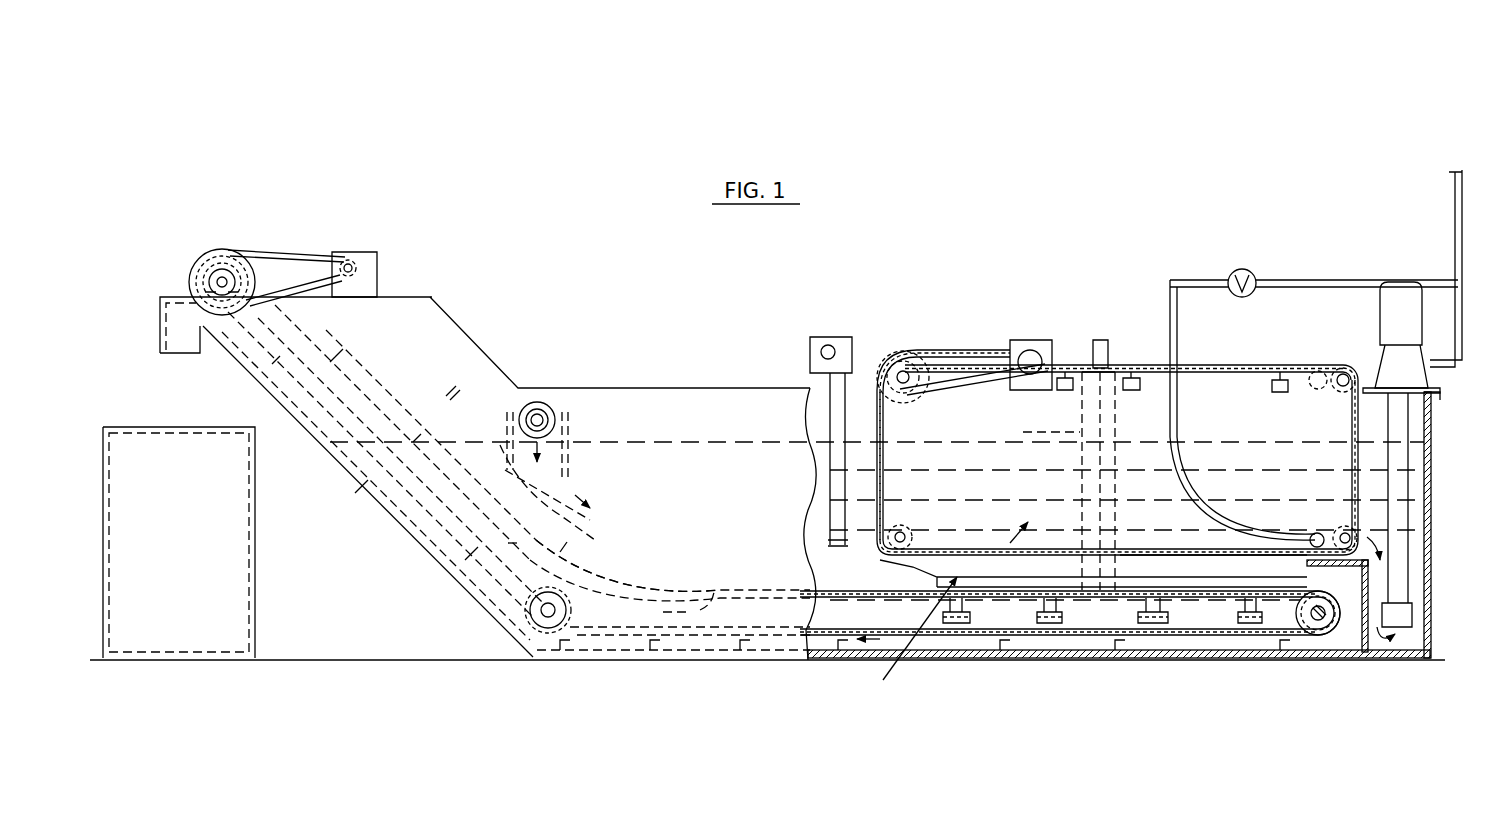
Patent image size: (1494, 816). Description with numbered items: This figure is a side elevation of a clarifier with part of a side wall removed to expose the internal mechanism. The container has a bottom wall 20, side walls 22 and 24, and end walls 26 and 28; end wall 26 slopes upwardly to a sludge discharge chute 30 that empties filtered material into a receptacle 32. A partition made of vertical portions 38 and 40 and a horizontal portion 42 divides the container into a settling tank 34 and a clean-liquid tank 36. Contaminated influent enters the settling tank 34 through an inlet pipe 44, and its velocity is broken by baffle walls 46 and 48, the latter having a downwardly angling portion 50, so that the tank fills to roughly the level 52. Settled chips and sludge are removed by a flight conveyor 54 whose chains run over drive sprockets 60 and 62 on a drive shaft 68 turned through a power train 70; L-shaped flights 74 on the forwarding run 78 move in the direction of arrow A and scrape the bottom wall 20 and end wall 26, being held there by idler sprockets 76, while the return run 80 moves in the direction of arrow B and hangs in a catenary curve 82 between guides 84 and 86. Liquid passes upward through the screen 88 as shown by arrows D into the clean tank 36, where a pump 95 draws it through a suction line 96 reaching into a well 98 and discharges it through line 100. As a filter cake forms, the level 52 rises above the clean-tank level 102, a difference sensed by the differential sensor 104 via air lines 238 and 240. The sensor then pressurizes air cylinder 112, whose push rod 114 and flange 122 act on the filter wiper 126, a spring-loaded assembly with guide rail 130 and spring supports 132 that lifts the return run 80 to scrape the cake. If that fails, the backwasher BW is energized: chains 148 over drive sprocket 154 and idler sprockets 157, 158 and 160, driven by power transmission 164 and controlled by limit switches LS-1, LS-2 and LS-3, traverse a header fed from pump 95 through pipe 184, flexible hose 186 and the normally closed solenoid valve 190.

The bottom wall 20 is at (812, 660).
The side wall 22 is at (962, 424).
The side wall 24 is at (702, 397).
The end wall 26 is at (397, 518).
The end wall 28 is at (1430, 487).
The sludge discharge chute 30 is at (185, 360).
The receptacle 32 is at (179, 542).
The settling tank 34 is at (1052, 524).
The clean-liquid tank 36 is at (996, 519).
The vertical portion 38 is at (873, 433).
The vertical portion 40 is at (1363, 640).
The horizontal portion 42 is at (1350, 565).
The inlet pipe 44 is at (543, 402).
The vertical wall 46 is at (575, 425).
The vertical wall 48 is at (505, 420).
The downwardly angling portion 50 is at (478, 445).
The liquid level 52 is at (712, 440).
The flight conveyor 54 is at (318, 337).
The drive sprocket 60 is at (228, 268).
The drive sprocket 62 is at (226, 248).
The drive shaft 68 is at (216, 278).
The power train 70 is at (340, 258).
The flights 74 is at (347, 357).
The idler sprockets 76 is at (568, 597).
The forwarding run 78 is at (462, 585).
The return run 80 is at (672, 577).
The catenary curve 82 is at (551, 559).
The guide 84 is at (526, 542).
The guide 86 is at (672, 608).
The screen 88 is at (1167, 568).
The pump 95 is at (1382, 313).
The suction line 96 is at (1428, 573).
The well 98 is at (1408, 640).
The line 100 is at (1455, 336).
The liquid level 102 is at (1260, 445).
The liquid level differential sensor 104 is at (832, 337).
The double acting air cylinder 112 is at (1108, 350).
The push rod 114 is at (1075, 571).
The flange 122 is at (1028, 427).
The filter wiper 126 is at (1070, 608).
The guide rail 130 is at (997, 598).
The spring support 132 is at (955, 620).
The endless chain 148 is at (1082, 372).
The drive sprocket 154 is at (908, 374).
The idler sprocket 157 is at (1345, 368).
The idler sprocket 158 is at (1352, 537).
The idler sprocket 160 is at (912, 534).
The power transmission 164 is at (1012, 340).
The pipe 184 is at (1313, 280).
The flexible hose 186 is at (1177, 357).
The solenoid valve 190 is at (1246, 270).
The line 238 is at (825, 506).
The line 240 is at (857, 395).
The limit switch LS-1 is at (1063, 390).
The limit switch LS-2 is at (1282, 392).
The limit switch LS-3 is at (1135, 392).
The backwasher BW is at (1318, 532).
The arrow A is at (867, 665).
The arrow B is at (350, 378).
The arrow D is at (916, 641).